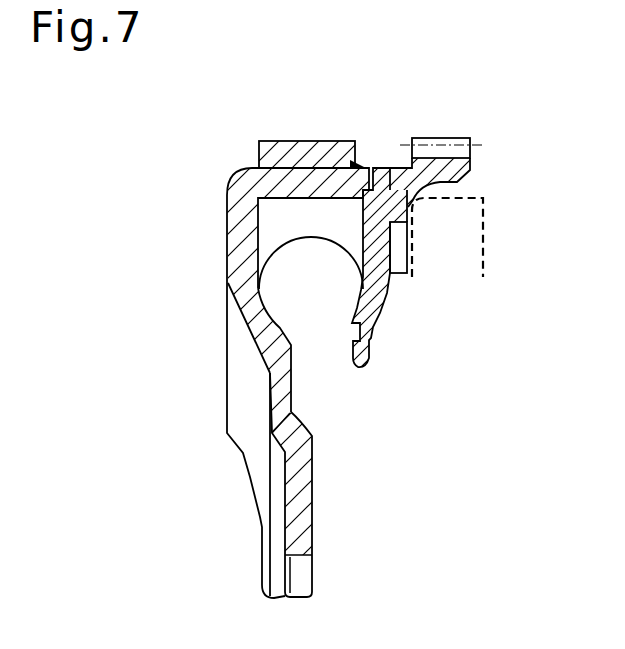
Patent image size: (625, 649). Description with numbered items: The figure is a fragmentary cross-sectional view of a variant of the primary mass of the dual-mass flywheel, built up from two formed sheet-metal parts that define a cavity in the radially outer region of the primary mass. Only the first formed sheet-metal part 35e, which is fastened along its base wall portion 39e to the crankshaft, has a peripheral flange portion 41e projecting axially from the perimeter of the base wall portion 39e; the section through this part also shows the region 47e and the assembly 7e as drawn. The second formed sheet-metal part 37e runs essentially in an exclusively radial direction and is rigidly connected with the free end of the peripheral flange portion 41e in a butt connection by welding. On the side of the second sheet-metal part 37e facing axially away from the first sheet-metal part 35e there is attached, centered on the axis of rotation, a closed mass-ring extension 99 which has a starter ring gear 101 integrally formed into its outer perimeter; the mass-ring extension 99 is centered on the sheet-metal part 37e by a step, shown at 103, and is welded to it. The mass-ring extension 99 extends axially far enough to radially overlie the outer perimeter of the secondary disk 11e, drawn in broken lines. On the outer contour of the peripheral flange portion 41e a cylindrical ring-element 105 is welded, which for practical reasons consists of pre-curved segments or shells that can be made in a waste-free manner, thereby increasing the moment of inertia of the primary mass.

The brake pad assembly 7e is at (221, 161).
The secondary disk 11e is at (463, 240).
The formed sheet-metal part 35e is at (217, 418).
The second formed sheet-metal part 37e is at (393, 310).
The base wall portion 39e is at (268, 340).
The peripheral flange portion 41e is at (296, 184).
The bore 47e is at (300, 276).
The mass-ring extension 99 is at (453, 182).
The starter ring gear 101 is at (447, 153).
The retainer leg 103 is at (388, 183).
The cylindrical ring-element 105 is at (317, 155).